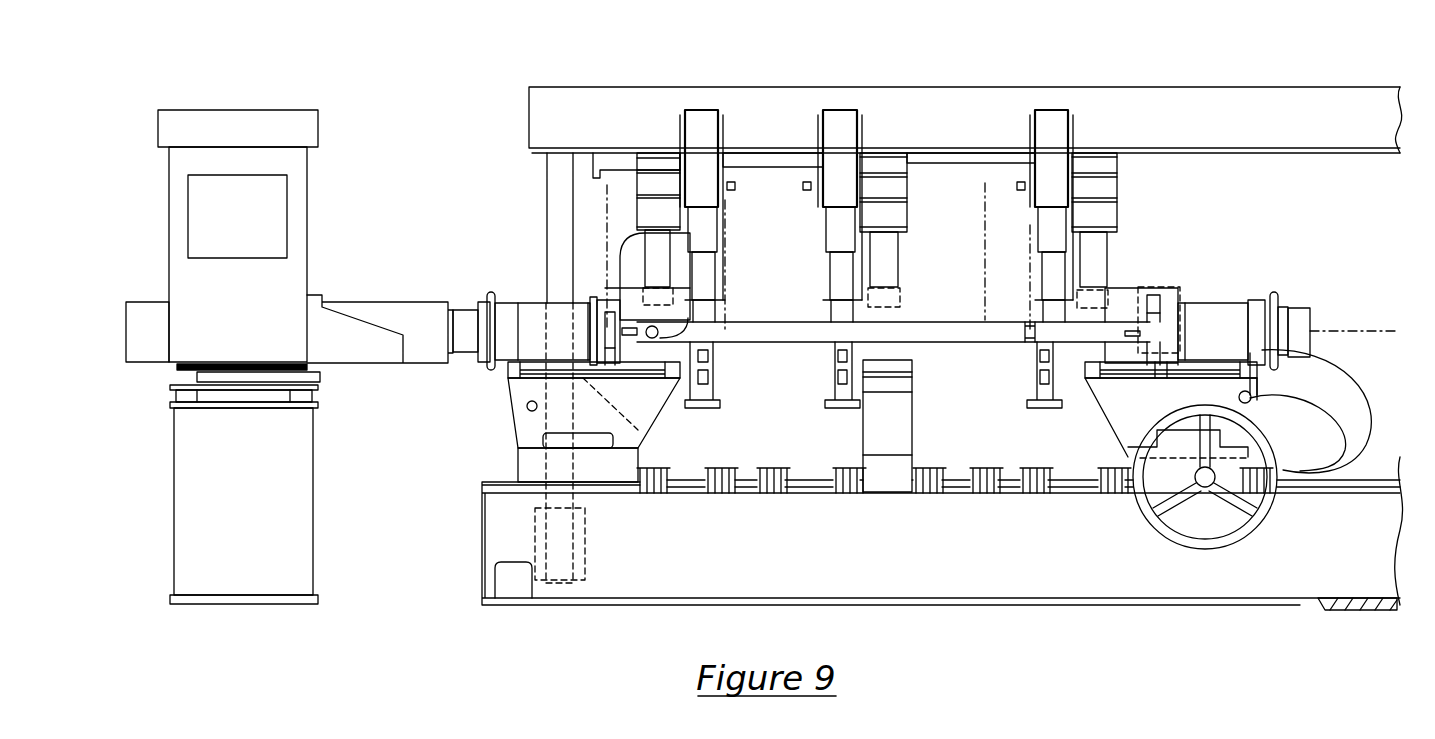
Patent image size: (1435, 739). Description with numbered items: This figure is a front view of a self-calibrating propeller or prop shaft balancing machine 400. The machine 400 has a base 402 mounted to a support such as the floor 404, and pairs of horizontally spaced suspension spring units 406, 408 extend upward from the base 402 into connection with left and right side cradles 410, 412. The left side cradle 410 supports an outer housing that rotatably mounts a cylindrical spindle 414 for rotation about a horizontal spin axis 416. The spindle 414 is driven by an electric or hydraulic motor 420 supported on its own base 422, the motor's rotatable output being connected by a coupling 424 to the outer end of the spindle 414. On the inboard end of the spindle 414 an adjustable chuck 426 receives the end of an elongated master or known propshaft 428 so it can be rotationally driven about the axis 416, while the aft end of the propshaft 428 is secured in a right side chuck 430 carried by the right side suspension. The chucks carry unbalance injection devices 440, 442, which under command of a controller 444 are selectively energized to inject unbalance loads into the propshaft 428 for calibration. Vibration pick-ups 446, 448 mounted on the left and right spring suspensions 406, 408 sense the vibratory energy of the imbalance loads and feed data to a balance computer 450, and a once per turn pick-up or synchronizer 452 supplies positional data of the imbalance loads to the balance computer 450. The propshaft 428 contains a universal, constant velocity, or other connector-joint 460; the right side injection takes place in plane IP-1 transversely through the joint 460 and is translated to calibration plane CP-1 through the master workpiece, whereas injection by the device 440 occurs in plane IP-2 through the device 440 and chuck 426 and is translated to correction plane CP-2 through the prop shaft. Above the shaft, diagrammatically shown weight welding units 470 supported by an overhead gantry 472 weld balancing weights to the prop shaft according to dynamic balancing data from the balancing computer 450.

The propeller or prop shaft balancing machine 400 is at (1192, 288).
The base 402 is at (1300, 565).
The floor 404 is at (1370, 612).
The suspension spring unit 406 is at (600, 418).
The suspension spring unit 408 is at (1123, 480).
The left side cradle 410 is at (535, 373).
The right side cradle 412 is at (1250, 380).
The cylindrical spindle 414 is at (575, 330).
The horizontal spin axis 416 is at (1350, 330).
The motor 420 is at (150, 313).
The base 422 is at (297, 535).
The coupling 424 is at (465, 320).
The chuck 426 is at (690, 233).
The master propshaft 428 is at (755, 322).
The right side chuck 430 is at (1143, 312).
The unbalance injection device 440 is at (592, 292).
The unbalance injection device 442 is at (1155, 292).
The controller 444 is at (239, 126).
The vibration pick-up 446 is at (527, 406).
The vibration pick-up 448 is at (1255, 397).
The balance computer 450 is at (290, 161).
The once per turn pick-up or synchronizer 452 is at (690, 300).
The connector-joint 460 is at (1028, 345).
The weight welding units 470 is at (1047, 133).
The overhead gantry 472 is at (766, 110).
The injection plane IP-1 is at (1028, 232).
The injection plane IP-2 is at (604, 207).
The calibration plane CP-1 is at (985, 293).
The correction plane CP-2 is at (726, 263).